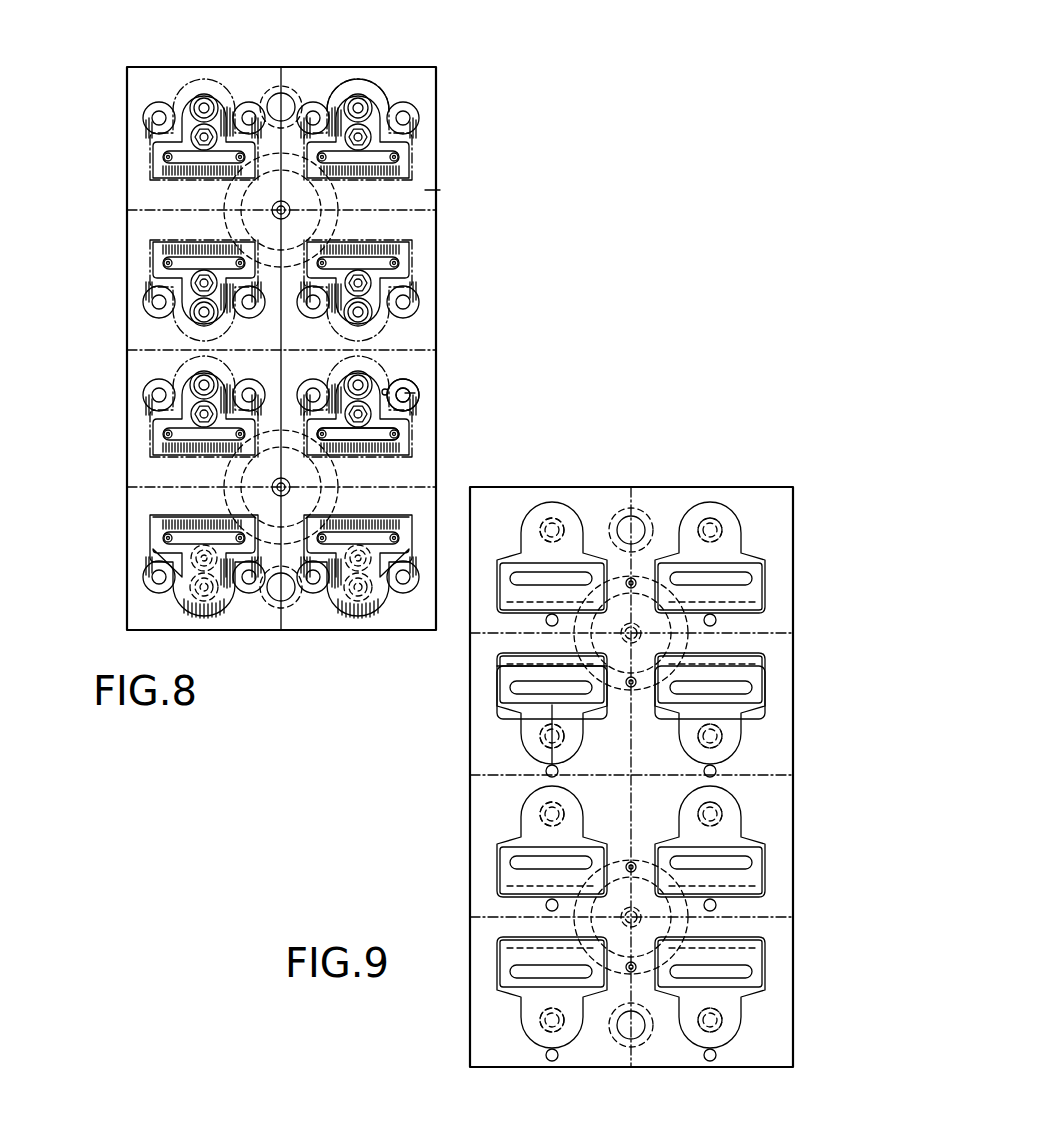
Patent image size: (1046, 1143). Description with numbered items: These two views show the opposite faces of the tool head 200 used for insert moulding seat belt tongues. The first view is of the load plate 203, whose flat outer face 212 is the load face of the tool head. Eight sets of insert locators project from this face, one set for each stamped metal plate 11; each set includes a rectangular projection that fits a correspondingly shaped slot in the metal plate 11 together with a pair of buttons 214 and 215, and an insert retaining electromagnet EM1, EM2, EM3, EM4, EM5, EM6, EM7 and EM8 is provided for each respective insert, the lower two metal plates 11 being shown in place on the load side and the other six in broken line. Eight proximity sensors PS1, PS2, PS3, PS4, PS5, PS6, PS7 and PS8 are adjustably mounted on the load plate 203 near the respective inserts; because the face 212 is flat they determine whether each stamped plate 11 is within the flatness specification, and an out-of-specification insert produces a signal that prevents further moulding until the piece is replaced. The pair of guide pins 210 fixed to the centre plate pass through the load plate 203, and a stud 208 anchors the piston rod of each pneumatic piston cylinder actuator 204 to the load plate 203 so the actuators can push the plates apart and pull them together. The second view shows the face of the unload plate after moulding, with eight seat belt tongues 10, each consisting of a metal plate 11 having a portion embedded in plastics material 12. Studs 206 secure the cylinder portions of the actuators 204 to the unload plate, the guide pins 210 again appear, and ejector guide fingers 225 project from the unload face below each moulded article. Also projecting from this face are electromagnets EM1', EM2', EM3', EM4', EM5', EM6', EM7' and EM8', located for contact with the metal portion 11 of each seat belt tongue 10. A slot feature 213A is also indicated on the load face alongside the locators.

In FIG. 8, the insert retaining electromagnet EM1 is at (130, 90).
In FIG. 8, the insert retaining electromagnet EM2 is at (422, 84).
In FIG. 8, the insert retaining electromagnet EM3 is at (139, 311).
In FIG. 8, the insert retaining electromagnet EM4 is at (432, 310).
In FIG. 8, the insert retaining electromagnet EM5 is at (139, 375).
In FIG. 8, the insert retaining electromagnet EM6 is at (433, 403).
In FIG. 8, the insert retaining electromagnet EM7 is at (135, 581).
In FIG. 8, the insert retaining electromagnet EM8 is at (342, 641).
In FIG. 8, the proximity sensor PS1 is at (196, 140).
In FIG. 8, the proximity sensor PS2 is at (366, 140).
In FIG. 8, the proximity sensor PS3 is at (194, 283).
In FIG. 8, the proximity sensor PS4 is at (368, 283).
In FIG. 8, the proximity sensor PS5 is at (194, 414).
In FIG. 8, the proximity sensor PS6 is at (358, 414).
In FIG. 8, the proximity sensor PS7 is at (194, 548).
In FIG. 8, the proximity sensor PS8 is at (355, 570).
In FIG. 9, the electromagnet EM1' is at (557, 494).
In FIG. 9, the electromagnet EM2' is at (786, 521).
In FIG. 9, the electromagnet EM3' is at (477, 746).
In FIG. 9, the electromagnet EM4' is at (784, 726).
In FIG. 9, the electromagnet EM5' is at (479, 809).
In FIG. 9, the electromagnet EM6' is at (784, 818).
In FIG. 9, the electromagnet EM7' is at (471, 1016).
In FIG. 9, the electromagnet EM8' is at (784, 1016).
In FIG. 8, the tool head 200 is at (522, 64).
In FIG. 8, the load plate 203 is at (366, 78).
In FIG. 8, the pneumatic piston cylinder actuator 204 is at (240, 200).
In FIG. 9, the pneumatic piston cylinder actuator 204 is at (690, 636).
In FIG. 8, the stud 208 is at (272, 212).
In FIG. 8, the guide pin 210 is at (285, 100).
In FIG. 9, the guide pin 210 is at (636, 522).
In FIG. 8, the outer face 212 is at (437, 100).
In FIG. 8, the metal plate 11 is at (435, 206).
In FIG. 9, the metal plate 11 is at (528, 706).
In FIG. 8, the button 215 is at (412, 385).
In FIG. 8, the button 214 is at (386, 395).
In FIG. 8, the slot 213A is at (368, 438).
In FIG. 9, the plastics material 12 is at (528, 653).
In FIG. 9, the seat belt tongue 10 is at (520, 677).
In FIG. 9, the stud 206 is at (636, 578).
In FIG. 9, the ejector guide finger 225 is at (546, 906).